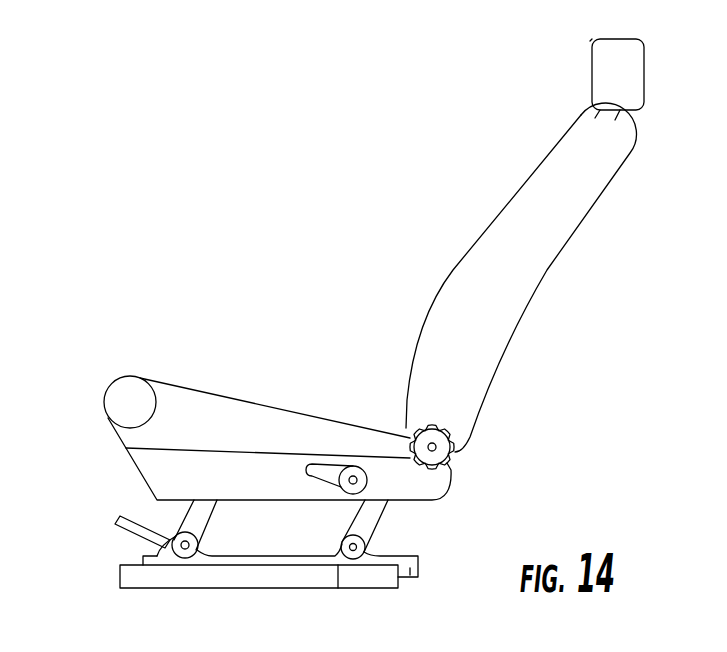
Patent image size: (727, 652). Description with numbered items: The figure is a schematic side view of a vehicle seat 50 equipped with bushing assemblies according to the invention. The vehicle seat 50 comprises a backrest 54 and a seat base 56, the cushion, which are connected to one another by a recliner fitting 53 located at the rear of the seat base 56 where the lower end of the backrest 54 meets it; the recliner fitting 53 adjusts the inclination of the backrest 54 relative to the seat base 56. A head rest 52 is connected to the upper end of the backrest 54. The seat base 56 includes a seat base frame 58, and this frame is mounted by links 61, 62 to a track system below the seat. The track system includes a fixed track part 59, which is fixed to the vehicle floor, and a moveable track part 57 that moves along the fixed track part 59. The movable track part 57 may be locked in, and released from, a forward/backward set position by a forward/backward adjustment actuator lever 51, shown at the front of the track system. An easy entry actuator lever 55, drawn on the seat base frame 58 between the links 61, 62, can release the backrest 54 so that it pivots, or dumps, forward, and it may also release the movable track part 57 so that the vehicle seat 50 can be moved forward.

The vehicle seat 50 is at (323, 170).
The forward/backward adjustment actuator lever 51 is at (123, 535).
The head rest 52 is at (610, 75).
The recliner fitting 53 is at (433, 452).
The backrest 54 is at (487, 325).
The easy entry actuator lever 55 is at (323, 484).
The seat base 56 is at (188, 388).
The moveable track part 57 is at (410, 575).
The seat base frame 58 is at (133, 465).
The fixed track part 59 is at (338, 567).
The link 61 is at (203, 513).
The link 62 is at (373, 512).